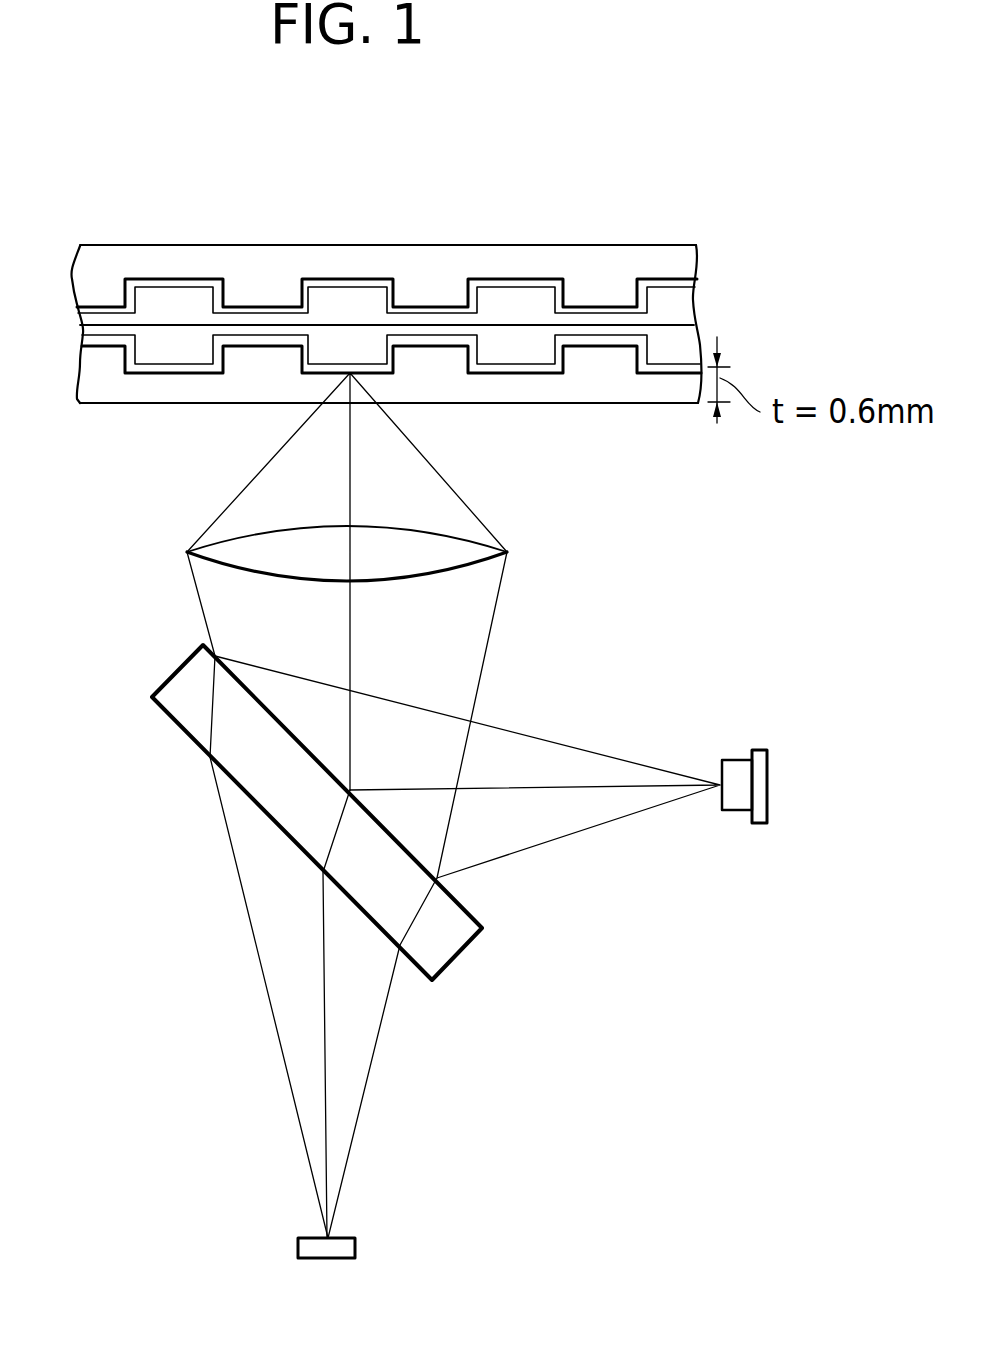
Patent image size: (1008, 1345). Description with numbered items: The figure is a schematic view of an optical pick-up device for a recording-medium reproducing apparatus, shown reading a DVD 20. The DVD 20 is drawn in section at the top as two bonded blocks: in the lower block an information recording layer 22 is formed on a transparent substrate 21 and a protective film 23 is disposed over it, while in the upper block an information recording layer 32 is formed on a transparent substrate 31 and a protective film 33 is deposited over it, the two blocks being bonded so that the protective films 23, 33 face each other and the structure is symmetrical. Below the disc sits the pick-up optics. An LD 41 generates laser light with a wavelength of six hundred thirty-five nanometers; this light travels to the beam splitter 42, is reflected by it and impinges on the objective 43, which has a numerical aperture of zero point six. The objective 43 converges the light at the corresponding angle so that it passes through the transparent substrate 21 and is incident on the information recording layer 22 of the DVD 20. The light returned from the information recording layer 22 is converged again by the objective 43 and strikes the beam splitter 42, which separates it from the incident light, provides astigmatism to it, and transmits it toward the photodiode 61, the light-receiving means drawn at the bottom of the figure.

The DVD 20 is at (368, 236).
The transparent substrate 31 is at (608, 260).
The information recording layer 32 is at (698, 280).
The protective film 33 is at (673, 310).
The protective film 23 is at (677, 348).
The information recording layer 22 is at (670, 363).
The transparent substrate 21 is at (597, 382).
The objective 43 is at (450, 570).
The beam splitter 42 is at (460, 955).
The LD 41 is at (735, 812).
The photodiode 61 is at (355, 1243).